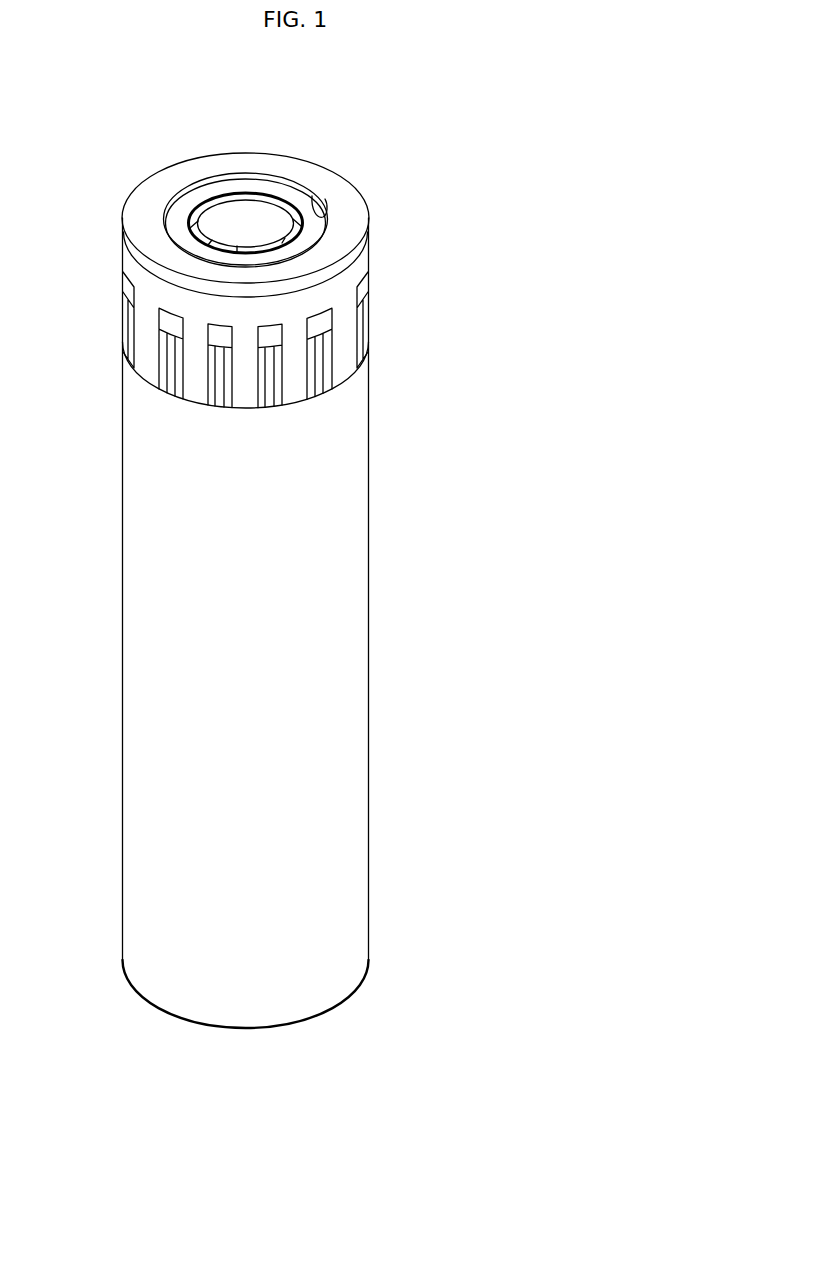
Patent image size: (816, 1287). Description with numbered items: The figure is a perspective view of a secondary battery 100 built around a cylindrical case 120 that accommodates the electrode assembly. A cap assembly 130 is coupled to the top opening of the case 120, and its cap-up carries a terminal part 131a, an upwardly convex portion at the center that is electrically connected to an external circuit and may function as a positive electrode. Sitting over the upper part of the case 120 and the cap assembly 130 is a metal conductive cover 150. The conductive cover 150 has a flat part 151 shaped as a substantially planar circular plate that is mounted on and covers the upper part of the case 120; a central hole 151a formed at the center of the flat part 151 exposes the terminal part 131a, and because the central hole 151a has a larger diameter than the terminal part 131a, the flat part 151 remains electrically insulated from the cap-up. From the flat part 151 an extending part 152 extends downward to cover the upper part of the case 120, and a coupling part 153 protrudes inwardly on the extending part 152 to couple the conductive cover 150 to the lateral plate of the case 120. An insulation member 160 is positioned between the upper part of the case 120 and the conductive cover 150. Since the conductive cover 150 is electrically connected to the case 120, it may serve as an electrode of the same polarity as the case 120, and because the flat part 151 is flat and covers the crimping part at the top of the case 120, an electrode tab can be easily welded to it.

The secondary battery 100 is at (92, 108).
The case 120 is at (380, 545).
The cap assembly 130 is at (212, 190).
The terminal part 131a is at (246, 222).
The conductive cover 150 is at (484, 157).
The flat part 151 is at (343, 208).
The central hole 151a is at (315, 199).
The extending part 152 is at (357, 267).
The coupling part 153 is at (318, 351).
The insulation member 160 is at (293, 197).